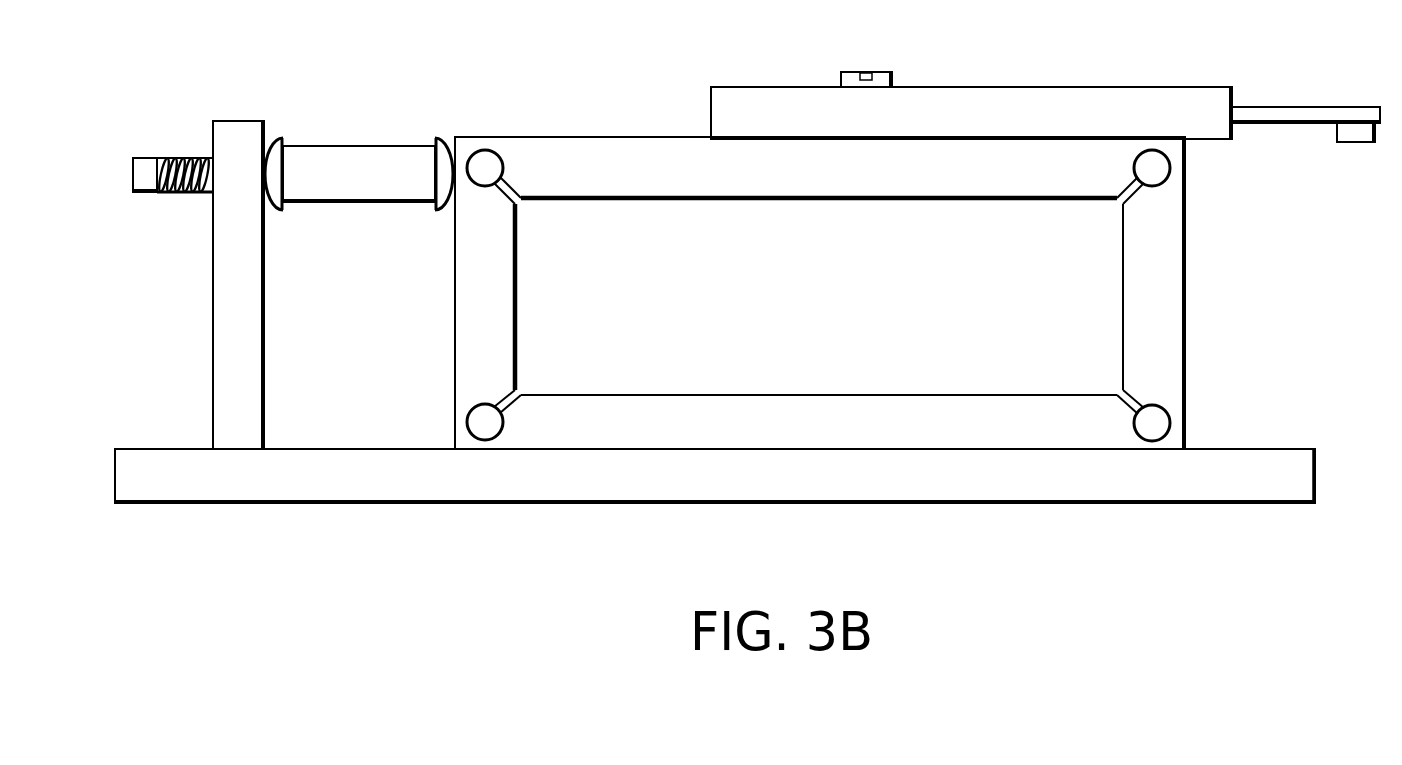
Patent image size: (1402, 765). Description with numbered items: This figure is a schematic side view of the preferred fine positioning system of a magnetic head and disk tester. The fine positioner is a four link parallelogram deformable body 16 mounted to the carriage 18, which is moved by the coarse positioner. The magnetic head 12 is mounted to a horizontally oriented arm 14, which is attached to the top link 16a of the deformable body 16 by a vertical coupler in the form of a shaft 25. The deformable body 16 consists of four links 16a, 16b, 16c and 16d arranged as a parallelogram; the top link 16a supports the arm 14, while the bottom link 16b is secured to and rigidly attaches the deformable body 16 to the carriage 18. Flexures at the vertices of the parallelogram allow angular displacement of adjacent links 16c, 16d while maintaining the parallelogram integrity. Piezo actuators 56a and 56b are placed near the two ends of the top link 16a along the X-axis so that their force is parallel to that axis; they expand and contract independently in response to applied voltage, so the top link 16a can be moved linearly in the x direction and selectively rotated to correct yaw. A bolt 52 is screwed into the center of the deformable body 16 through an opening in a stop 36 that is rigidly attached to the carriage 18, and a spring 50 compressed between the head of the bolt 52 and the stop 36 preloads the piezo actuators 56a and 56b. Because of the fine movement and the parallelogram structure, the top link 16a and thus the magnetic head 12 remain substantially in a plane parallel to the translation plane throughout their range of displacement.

The magnetic head 12 is at (1357, 128).
The horizontally oriented arm 14 is at (1097, 103).
The four link parallelogram deformable body 16 is at (1247, 363).
The top link 16a is at (633, 135).
The bottom link 16b is at (1018, 425).
The link 16c is at (467, 307).
The link 16d is at (1158, 298).
The carriage 18 is at (625, 485).
The shaft 25 is at (851, 71).
The stop 36 is at (238, 135).
The spring 50 is at (170, 193).
The bolt 52 is at (143, 172).
The piezo actuator 56a is at (325, 157).
The piezo actuator 56b is at (405, 150).